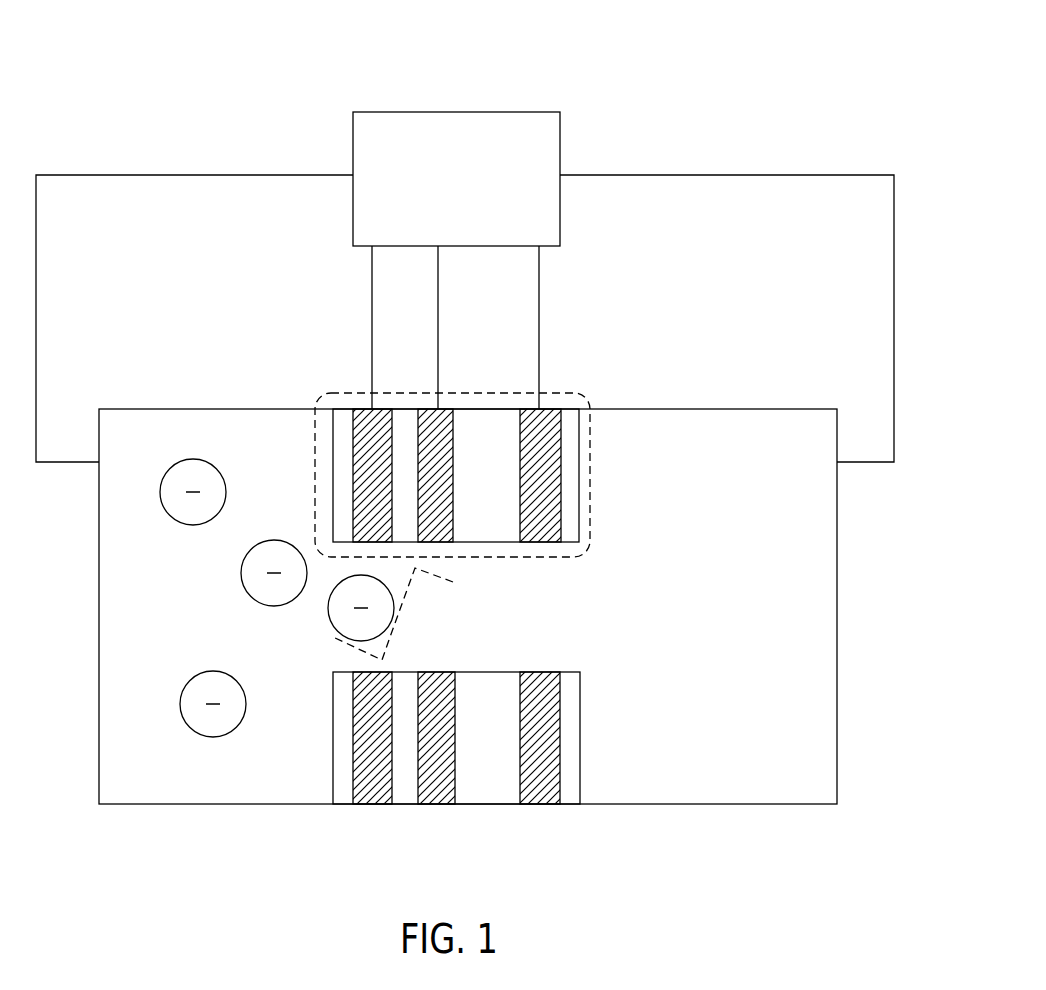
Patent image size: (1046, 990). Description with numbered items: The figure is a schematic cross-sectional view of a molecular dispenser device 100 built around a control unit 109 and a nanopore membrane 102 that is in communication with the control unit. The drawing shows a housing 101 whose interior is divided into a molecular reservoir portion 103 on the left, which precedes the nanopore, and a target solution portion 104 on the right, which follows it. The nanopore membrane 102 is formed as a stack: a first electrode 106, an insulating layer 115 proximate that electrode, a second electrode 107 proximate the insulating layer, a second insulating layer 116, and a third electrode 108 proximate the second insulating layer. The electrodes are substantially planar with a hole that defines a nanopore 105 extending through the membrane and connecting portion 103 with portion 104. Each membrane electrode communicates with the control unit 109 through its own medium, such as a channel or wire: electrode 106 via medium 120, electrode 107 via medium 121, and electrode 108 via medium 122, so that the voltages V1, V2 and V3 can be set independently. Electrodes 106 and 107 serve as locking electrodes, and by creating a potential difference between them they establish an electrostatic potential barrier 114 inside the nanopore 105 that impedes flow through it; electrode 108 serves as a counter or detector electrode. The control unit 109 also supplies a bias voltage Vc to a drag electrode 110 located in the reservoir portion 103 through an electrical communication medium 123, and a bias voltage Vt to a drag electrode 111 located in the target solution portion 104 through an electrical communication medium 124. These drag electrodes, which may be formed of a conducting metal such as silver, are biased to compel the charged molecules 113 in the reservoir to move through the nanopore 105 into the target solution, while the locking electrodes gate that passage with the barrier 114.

The device 100 is at (738, 65).
The chamber body 101 is at (152, 364).
The nanopore membrane 102 is at (572, 393).
The molecular reservoir portion 103 is at (226, 797).
The target solution portion 104 is at (696, 799).
The nanopore 105 is at (318, 652).
The electrode 106 is at (370, 797).
The second electrode 107 is at (438, 797).
The third electrode 108 is at (541, 797).
The control unit 109 is at (532, 112).
The electrode 110 is at (86, 450).
The electrode 111 is at (852, 436).
The charged molecule 113 is at (220, 470).
The electrostatic potential barrier 114 is at (393, 633).
The insulating layer 115 is at (404, 797).
The second insulating layer 116 is at (483, 797).
The medium 120 is at (372, 283).
The medium 121 is at (438, 283).
The medium 122 is at (539, 283).
The electrical communication medium 123 is at (170, 175).
The electrical communication medium 124 is at (622, 175).